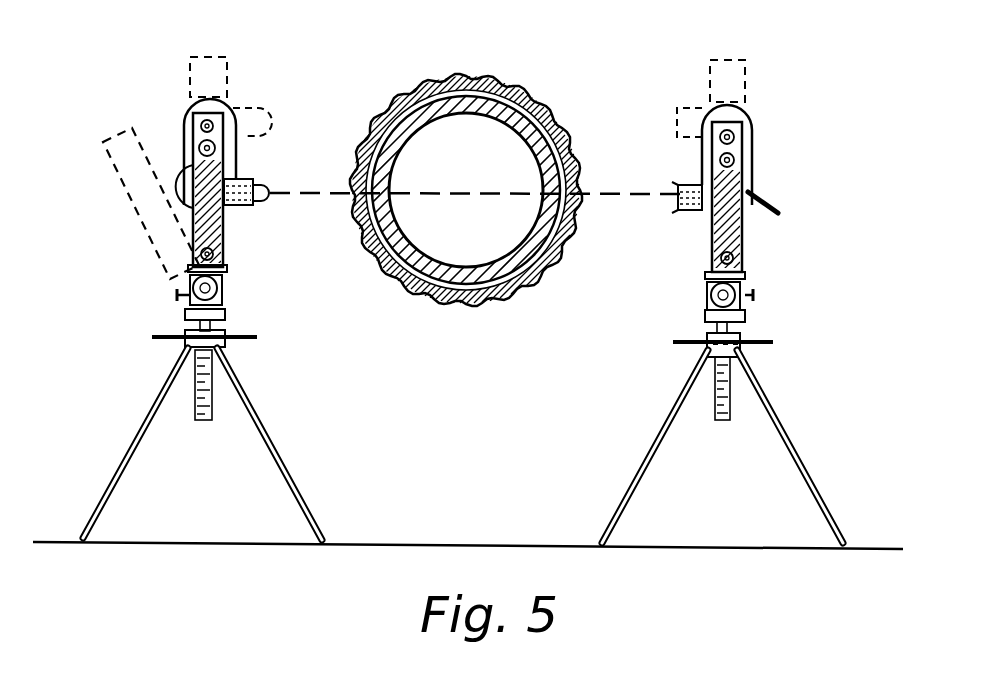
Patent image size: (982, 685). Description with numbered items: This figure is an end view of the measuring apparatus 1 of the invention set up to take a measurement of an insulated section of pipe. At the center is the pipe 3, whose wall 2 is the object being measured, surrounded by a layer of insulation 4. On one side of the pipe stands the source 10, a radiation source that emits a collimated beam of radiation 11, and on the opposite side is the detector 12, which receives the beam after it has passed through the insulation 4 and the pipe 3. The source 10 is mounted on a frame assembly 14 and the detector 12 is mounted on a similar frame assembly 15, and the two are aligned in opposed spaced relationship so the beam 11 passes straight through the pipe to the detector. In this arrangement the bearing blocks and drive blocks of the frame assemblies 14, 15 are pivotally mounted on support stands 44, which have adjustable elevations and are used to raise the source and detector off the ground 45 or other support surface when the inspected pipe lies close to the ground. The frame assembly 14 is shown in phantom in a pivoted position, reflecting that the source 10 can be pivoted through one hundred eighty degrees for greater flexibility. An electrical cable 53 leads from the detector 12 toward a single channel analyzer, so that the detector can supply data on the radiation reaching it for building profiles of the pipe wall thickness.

The apparatus 1 is at (458, 184).
The wall 2 is at (509, 112).
The pipe 3 is at (442, 92).
The insulation 4 is at (411, 94).
The source 10 is at (247, 178).
The collimated beam of radiation 11 is at (590, 193).
The detector 12 is at (690, 213).
The frame assembly 14 is at (130, 211).
The frame assembly 15 is at (757, 157).
The support stand 44 is at (268, 426).
The ground 45 is at (703, 544).
The electrical cable 53 is at (767, 197).